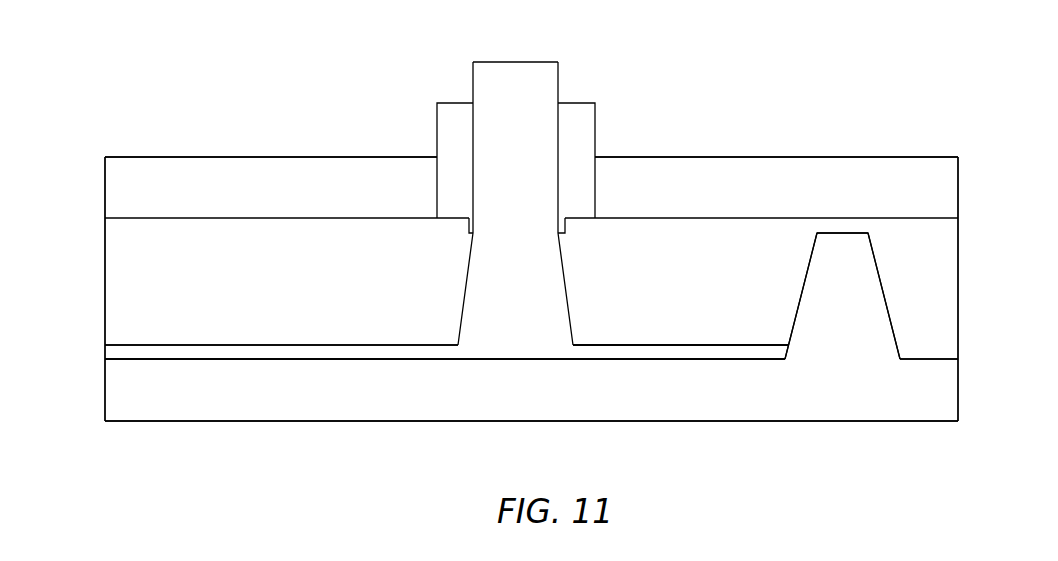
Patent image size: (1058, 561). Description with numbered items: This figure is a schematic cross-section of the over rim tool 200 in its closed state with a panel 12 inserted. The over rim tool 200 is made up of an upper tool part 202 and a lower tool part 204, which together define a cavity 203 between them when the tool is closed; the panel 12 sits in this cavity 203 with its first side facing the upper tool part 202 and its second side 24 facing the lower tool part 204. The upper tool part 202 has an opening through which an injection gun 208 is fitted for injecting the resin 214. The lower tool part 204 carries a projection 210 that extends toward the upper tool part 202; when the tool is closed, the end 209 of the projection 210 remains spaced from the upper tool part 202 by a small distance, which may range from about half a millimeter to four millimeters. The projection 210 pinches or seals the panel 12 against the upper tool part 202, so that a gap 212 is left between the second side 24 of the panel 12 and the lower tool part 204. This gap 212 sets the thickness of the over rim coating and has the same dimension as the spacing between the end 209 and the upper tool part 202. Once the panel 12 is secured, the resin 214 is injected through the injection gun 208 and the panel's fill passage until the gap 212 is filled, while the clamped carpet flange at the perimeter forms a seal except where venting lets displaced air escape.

The over rim tool 200 is at (297, 128).
The upper tool part 202 is at (240, 197).
The resin 214 is at (487, 90).
The injection gun 208 is at (590, 142).
The panel 12 is at (282, 288).
The end of the projection 209 is at (847, 232).
The projection 210 is at (836, 331).
The gap 212 is at (377, 353).
The cavity 203 is at (152, 357).
The second side 24 is at (726, 347).
The lower tool part 204 is at (260, 405).